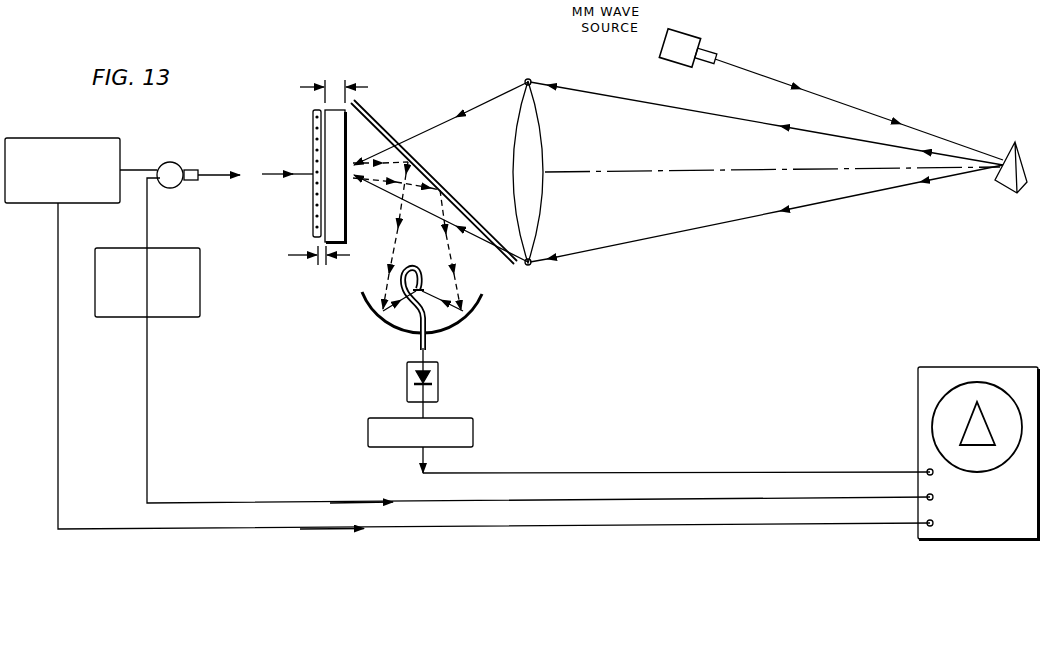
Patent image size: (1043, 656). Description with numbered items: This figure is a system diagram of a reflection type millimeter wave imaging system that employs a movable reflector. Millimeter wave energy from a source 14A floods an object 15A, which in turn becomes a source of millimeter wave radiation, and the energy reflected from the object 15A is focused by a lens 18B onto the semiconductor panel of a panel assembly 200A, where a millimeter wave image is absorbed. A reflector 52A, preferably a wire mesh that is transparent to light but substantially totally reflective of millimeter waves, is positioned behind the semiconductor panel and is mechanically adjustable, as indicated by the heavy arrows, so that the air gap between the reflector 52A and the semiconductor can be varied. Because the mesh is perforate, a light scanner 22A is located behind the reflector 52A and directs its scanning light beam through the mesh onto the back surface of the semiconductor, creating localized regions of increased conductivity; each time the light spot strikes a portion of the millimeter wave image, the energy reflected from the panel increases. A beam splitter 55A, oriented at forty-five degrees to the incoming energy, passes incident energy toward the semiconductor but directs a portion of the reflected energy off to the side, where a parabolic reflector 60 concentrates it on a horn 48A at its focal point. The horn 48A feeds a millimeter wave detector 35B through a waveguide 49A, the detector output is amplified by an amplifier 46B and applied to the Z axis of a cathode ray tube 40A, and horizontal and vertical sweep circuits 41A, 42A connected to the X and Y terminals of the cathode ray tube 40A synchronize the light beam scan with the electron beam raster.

The horizontal sweep circuit 41A is at (60, 138).
The vertical sweep circuit 42A is at (147, 248).
The light scanner 22A is at (181, 163).
The reflector 52A is at (313, 198).
The panel assembly 200A is at (325, 111).
The beam splitter 55A is at (385, 128).
The lens 18B is at (545, 158).
The source 14A is at (702, 38).
The object 15A is at (1026, 126).
The parabolic reflector 60 is at (386, 326).
The horn 48A is at (428, 280).
The waveguide 49A is at (430, 348).
The millimeter wave detector 35B is at (407, 386).
The amplifier 46B is at (383, 418).
The cathode ray tube 40A is at (963, 367).